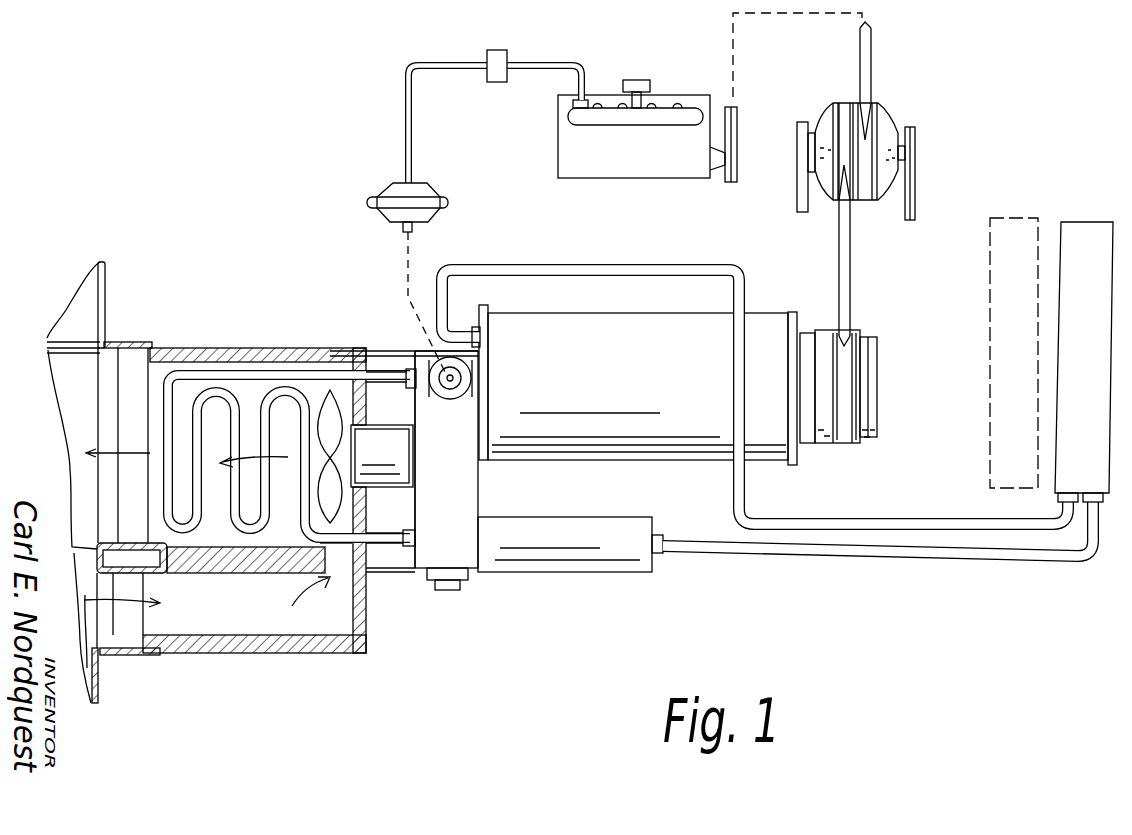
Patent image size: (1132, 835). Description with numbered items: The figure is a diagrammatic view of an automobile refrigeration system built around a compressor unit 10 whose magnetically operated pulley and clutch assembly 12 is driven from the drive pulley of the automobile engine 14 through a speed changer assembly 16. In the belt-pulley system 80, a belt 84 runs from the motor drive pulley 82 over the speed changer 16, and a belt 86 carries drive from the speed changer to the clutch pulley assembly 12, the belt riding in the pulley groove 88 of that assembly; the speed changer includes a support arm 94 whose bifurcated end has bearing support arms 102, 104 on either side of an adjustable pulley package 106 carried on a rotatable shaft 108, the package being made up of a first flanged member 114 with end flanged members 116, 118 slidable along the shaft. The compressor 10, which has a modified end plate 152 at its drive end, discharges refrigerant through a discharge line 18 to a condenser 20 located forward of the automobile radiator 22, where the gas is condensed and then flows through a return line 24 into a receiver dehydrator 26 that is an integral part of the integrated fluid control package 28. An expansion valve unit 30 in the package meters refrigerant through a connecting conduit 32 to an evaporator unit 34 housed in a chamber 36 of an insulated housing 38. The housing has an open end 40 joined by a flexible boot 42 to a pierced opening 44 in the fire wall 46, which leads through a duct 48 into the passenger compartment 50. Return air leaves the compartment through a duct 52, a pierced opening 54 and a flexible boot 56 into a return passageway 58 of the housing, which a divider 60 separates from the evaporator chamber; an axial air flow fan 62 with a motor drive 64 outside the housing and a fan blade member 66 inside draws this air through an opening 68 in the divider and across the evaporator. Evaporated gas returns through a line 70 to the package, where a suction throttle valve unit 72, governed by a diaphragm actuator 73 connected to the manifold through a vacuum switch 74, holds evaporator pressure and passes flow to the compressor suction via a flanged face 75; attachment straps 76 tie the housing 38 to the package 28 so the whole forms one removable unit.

The compressor unit 10 is at (680, 460).
The magnetically operated pulley and clutch assembly 12 is at (852, 333).
The automobile engine 14 is at (580, 158).
The speed changer assembly 16 is at (915, 133).
The discharge line 18 is at (678, 268).
The condenser 20 is at (1082, 230).
The automobile radiator 22 is at (990, 450).
The return line 24 is at (930, 556).
The receiver dehydrator 26 is at (597, 565).
The integrated fluid control package 28 is at (480, 493).
The expansion valve unit 30 is at (450, 582).
The connecting conduit 32 is at (387, 538).
The evaporator unit 34 is at (240, 542).
The chamber 36 is at (250, 390).
The housing 38 is at (210, 348).
The open end 40 is at (140, 362).
The flexible boot 42 is at (143, 344).
The pierced opening 44 is at (112, 352).
The fire wall 46 is at (104, 275).
The duct 48 is at (68, 340).
The passenger compartment 50 is at (80, 284).
The duct 52 is at (86, 672).
The pierced opening 54 is at (117, 640).
The flexible boot 56 is at (127, 641).
The return passageway 58 is at (265, 650).
The divider 60 is at (203, 570).
The axial air flow fan 62 is at (413, 428).
The motor drive 64 is at (393, 452).
The fan blade member 66 is at (330, 400).
The opening 68 is at (367, 572).
The line 70 is at (385, 376).
The suction throttle valve unit 72 is at (468, 368).
The diaphragm actuator 73 is at (390, 192).
The vacuum switch 74 is at (493, 52).
The flanged face 75 is at (487, 318).
The attachment straps 76 is at (403, 349).
The belt-pulley system 80 is at (836, 247).
The motor drive pulley 82 is at (737, 150).
The belt 84 is at (867, 50).
The belt 86 is at (845, 275).
The pulley groove 88 is at (833, 330).
The support arm 94 is at (913, 200).
The bearing support arm 102 is at (796, 194).
The bearing support arm 104 is at (913, 220).
The adjustable pulley package 106 is at (887, 133).
The rotatable shaft 108 is at (900, 152).
The first flanged member 114 is at (855, 103).
The end flanged member 116 is at (835, 107).
The end flanged member 118 is at (877, 202).
The end plate 152 is at (793, 467).